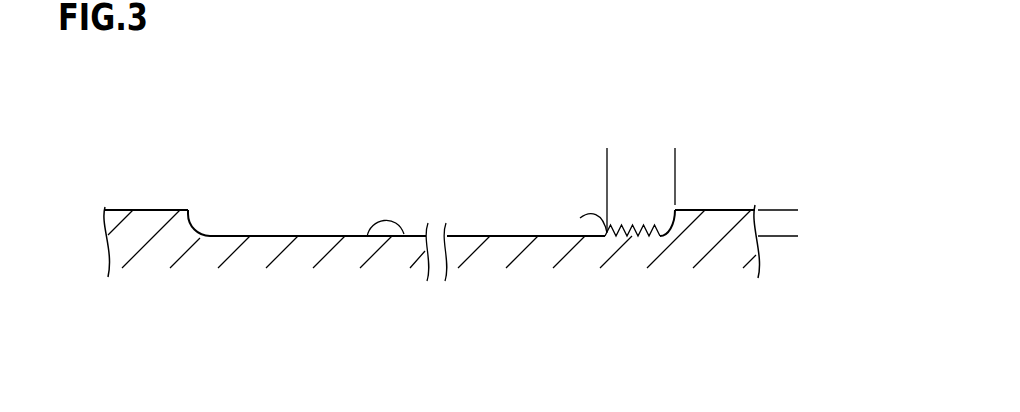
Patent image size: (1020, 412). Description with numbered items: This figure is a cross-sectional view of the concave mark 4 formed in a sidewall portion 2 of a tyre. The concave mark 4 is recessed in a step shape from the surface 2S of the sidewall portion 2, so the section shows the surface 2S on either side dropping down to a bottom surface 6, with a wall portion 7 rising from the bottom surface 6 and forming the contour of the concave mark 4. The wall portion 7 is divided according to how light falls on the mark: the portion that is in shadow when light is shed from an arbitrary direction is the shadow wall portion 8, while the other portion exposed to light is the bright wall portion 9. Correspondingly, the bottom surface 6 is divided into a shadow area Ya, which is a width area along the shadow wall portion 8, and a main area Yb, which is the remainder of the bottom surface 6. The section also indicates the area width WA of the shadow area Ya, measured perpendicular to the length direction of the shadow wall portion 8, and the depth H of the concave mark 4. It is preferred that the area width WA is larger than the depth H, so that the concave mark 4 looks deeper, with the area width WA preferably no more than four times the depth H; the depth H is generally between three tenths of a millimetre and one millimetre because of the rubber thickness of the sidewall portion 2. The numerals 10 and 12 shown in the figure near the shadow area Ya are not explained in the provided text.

The sidewall portion 2 is at (432, 198).
The surface 2S is at (153, 210).
The wall portion 7 is at (472, 173).
The bright wall portion 9 is at (199, 223).
The shadow wall portion 8 is at (667, 223).
The concave mark 4 is at (480, 178).
The bottom surface 6 is at (487, 311).
The shadow area Ya is at (580, 218).
The main area Yb is at (404, 234).
The serrated processed portion 10 is at (599, 157).
The serrations 12 is at (632, 218).
The area width WA is at (665, 156).
The depth H is at (790, 175).